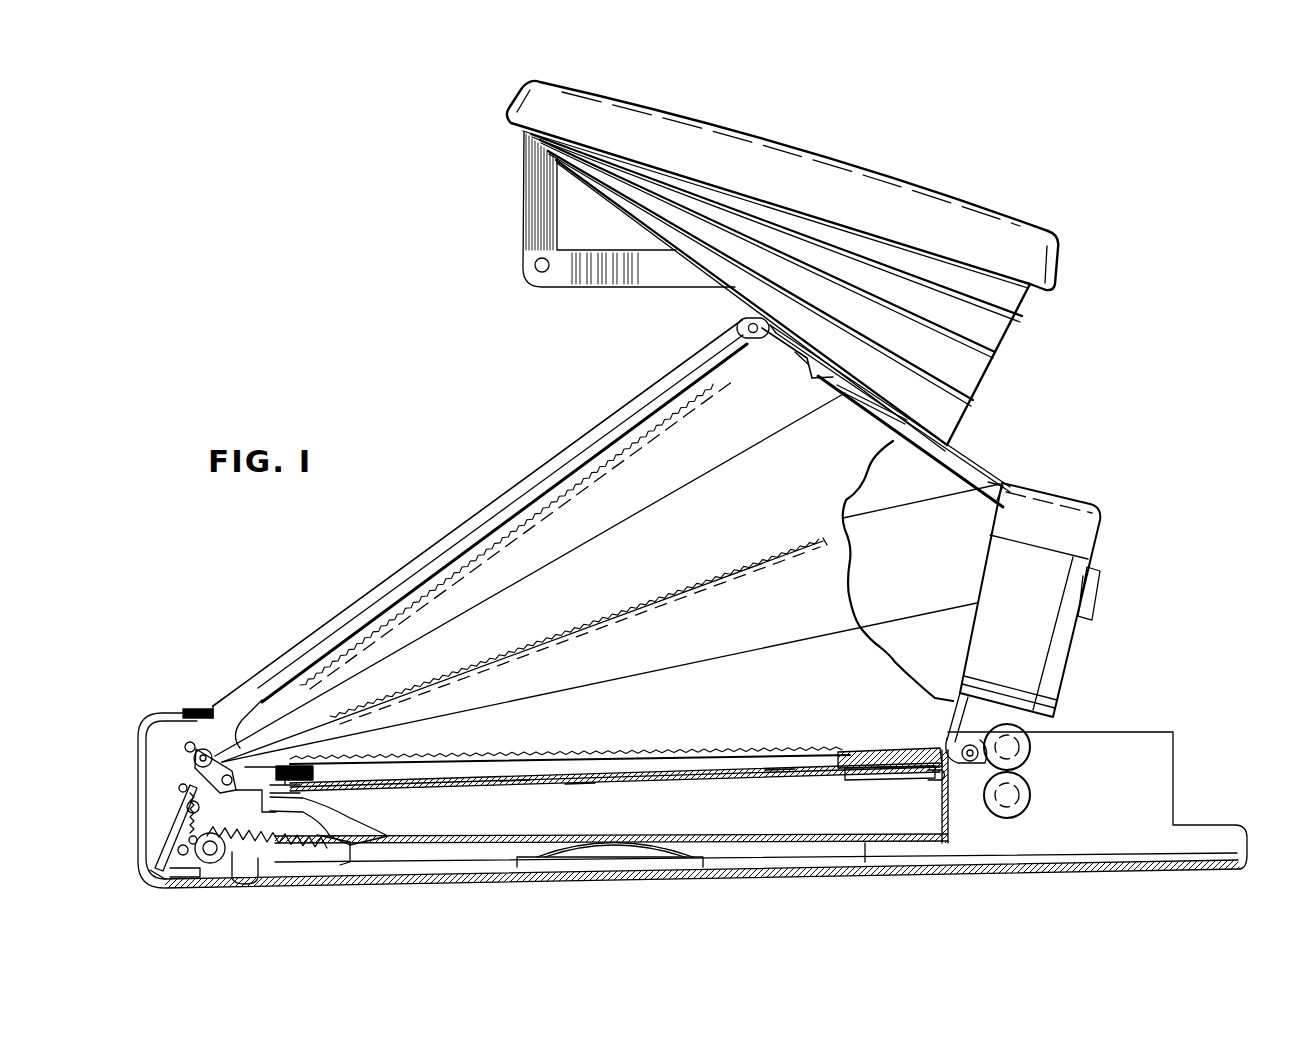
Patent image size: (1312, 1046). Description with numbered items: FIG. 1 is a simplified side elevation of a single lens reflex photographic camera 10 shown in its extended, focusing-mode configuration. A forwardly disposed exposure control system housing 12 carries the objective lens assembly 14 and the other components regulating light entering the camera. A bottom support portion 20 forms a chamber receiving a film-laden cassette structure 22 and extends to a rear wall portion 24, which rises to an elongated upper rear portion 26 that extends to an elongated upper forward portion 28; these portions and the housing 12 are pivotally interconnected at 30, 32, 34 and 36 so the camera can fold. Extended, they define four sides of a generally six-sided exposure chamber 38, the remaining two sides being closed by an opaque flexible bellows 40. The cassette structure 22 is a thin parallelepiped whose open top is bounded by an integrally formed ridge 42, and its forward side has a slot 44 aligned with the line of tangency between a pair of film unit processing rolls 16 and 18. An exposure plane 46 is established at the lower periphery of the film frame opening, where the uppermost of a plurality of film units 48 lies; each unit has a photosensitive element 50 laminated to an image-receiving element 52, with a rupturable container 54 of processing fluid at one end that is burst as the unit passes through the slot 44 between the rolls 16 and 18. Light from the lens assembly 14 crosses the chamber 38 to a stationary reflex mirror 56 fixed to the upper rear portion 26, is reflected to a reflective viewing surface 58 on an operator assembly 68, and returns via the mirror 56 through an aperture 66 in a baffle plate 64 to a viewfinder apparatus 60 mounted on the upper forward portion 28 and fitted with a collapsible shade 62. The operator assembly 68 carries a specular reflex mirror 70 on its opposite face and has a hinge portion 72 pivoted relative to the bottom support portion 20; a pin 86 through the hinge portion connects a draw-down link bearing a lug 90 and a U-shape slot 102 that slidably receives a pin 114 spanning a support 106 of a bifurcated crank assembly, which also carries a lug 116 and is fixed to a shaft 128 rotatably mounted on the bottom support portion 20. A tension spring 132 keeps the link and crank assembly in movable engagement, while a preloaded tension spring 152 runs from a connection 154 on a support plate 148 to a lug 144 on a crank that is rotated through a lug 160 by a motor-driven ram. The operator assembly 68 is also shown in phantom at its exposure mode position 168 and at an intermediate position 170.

The photographic camera 10 is at (1114, 372).
The exposure control system housing 12 is at (1086, 492).
The objective lens assembly 14 is at (1100, 578).
The film unit processing roll 16 is at (1031, 748).
The film unit processing roll 18 is at (1031, 797).
The bottom support portion 20 is at (945, 871).
The film-laden cassette structure 22 is at (458, 842).
The rear wall portion 24 is at (138, 770).
The elongated upper rear portion 26 is at (445, 536).
The elongated upper forward portion 28 is at (965, 456).
The pivotal interconnection 30 is at (193, 707).
The pivotal interconnection 32 is at (746, 326).
The pivotal interconnection 34 is at (1000, 488).
The pivotal interconnection 36 is at (969, 764).
The exposure chamber 38 is at (667, 565).
The flexible bellows 40 is at (876, 653).
The ridge 42 is at (848, 750).
The slot 44 is at (932, 781).
The exposure plane 46 is at (708, 776).
The film units 48 is at (673, 784).
The photosensitive element 50 is at (780, 779).
The image-receiving element 52 is at (578, 783).
The rupturable container 54 is at (890, 779).
The stationary reflex mirror 56 is at (640, 406).
The viewing surface 58 is at (675, 750).
The viewfinder apparatus 60 is at (505, 188).
The collapsible shade 62 is at (1000, 345).
The baffle plate 64 is at (868, 415).
The aperture 66 is at (806, 366).
The operator assembly 68 is at (326, 773).
The specular reflex mirror 70 is at (513, 782).
The hinge portion 72 is at (192, 766).
The pin 86 is at (227, 791).
The lug 90 is at (178, 787).
The U-shape slot 102 is at (150, 873).
The support 106 is at (196, 878).
The pin 114 is at (178, 851).
The lug 116 is at (172, 860).
The shaft 128 is at (211, 864).
The tension spring 132 is at (188, 840).
The lug 144 is at (190, 822).
The support plate 148 is at (340, 849).
The preloaded tension spring 152 is at (258, 880).
The spring connection 154 is at (342, 848).
The lug 160 is at (187, 805).
The exposure mode position 168 is at (628, 456).
The intermediate position 170 is at (646, 611).